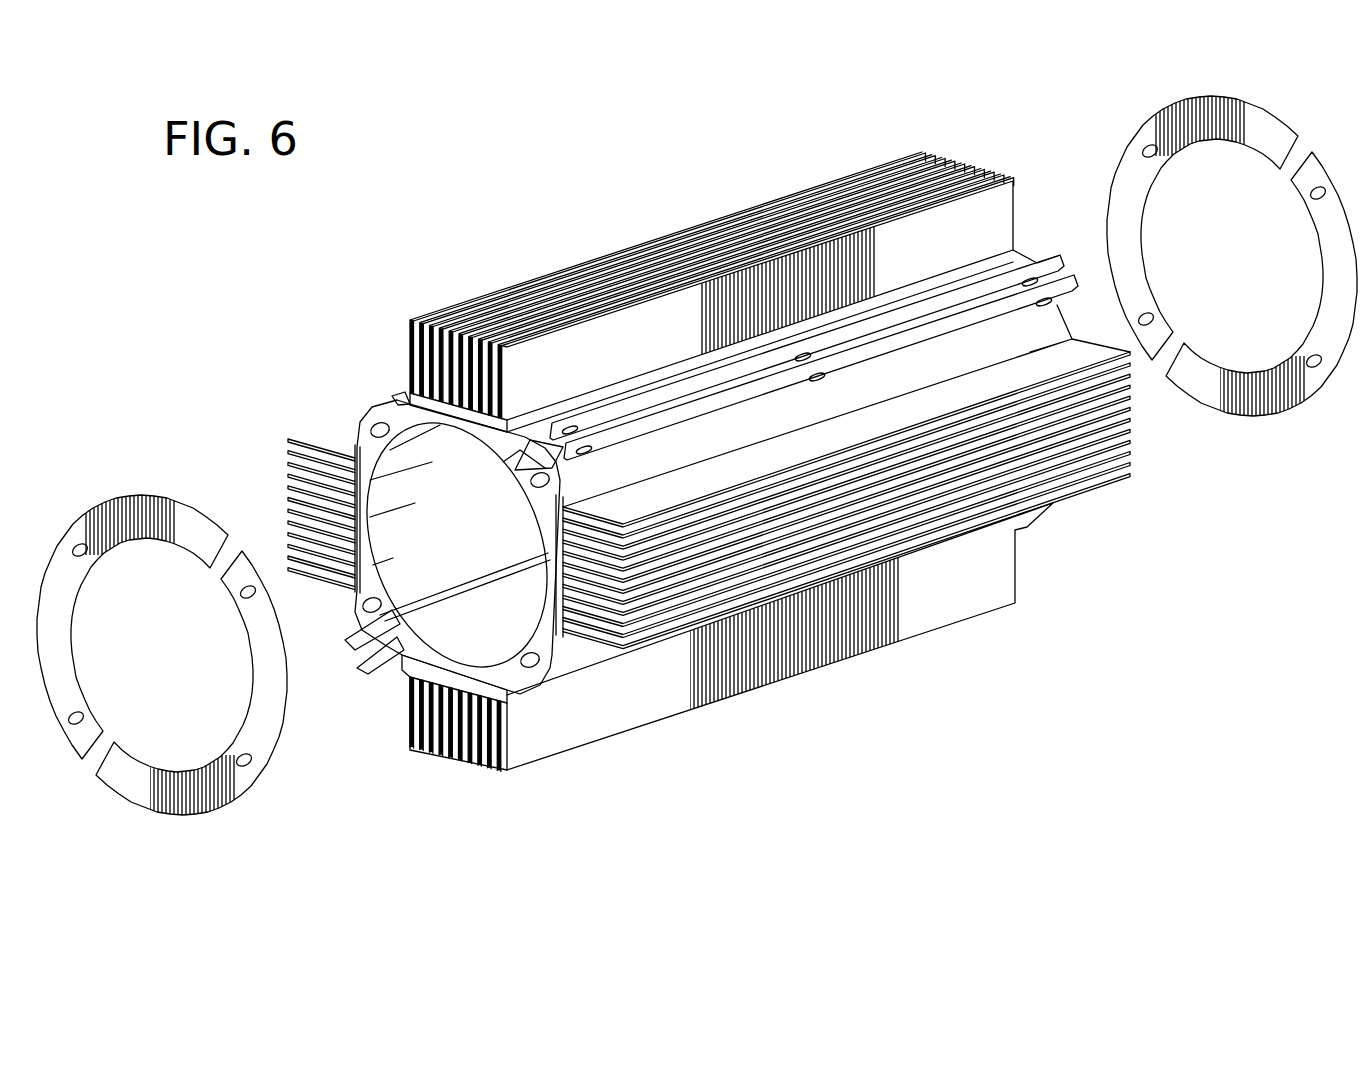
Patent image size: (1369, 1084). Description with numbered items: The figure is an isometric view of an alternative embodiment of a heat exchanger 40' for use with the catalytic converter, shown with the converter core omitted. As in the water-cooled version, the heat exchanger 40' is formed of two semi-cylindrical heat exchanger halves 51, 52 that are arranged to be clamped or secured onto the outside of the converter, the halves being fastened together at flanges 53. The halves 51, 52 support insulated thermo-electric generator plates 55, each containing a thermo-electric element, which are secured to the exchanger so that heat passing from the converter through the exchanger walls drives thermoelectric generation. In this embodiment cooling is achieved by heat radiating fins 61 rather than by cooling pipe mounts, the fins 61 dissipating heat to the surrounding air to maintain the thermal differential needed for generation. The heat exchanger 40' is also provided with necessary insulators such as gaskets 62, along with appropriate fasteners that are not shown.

The heat exchanger 40' is at (709, 418).
The heat exchanger half 51 is at (938, 545).
The heat exchanger half 52 is at (365, 436).
The flange 53 is at (887, 315).
The thermo-electric generator plate 55 is at (393, 398).
The heat radiating fins 61 is at (597, 340).
The gasket 62 is at (116, 500).